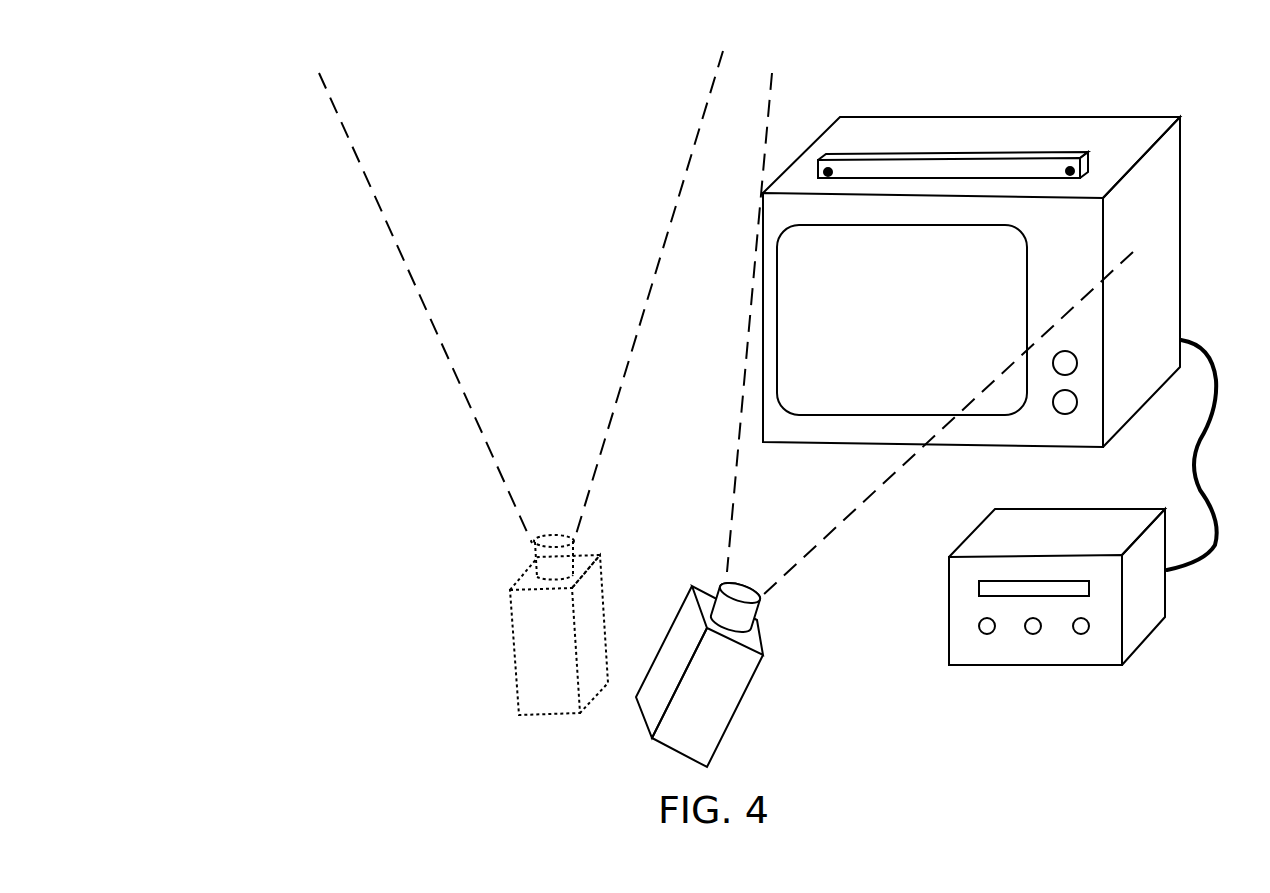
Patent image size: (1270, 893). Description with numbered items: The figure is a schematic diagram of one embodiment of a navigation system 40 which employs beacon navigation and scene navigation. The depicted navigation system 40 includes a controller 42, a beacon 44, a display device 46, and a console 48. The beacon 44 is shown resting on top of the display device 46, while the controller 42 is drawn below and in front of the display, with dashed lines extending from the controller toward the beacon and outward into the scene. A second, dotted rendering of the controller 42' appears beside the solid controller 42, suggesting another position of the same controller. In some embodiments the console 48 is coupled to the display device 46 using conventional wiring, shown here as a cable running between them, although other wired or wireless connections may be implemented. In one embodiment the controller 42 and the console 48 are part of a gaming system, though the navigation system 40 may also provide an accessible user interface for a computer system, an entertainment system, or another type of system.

The navigation system 40 is at (280, 96).
The controller 42 is at (724, 673).
The camera (alternate position) 42' is at (521, 625).
The beacon 44 is at (985, 158).
The display device 46 is at (1182, 308).
The console 48 is at (1168, 593).